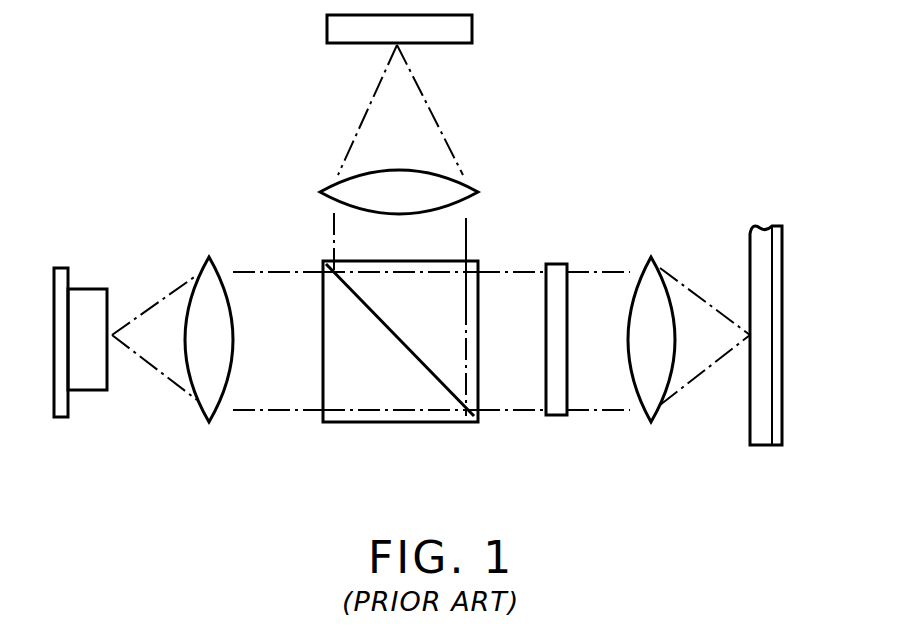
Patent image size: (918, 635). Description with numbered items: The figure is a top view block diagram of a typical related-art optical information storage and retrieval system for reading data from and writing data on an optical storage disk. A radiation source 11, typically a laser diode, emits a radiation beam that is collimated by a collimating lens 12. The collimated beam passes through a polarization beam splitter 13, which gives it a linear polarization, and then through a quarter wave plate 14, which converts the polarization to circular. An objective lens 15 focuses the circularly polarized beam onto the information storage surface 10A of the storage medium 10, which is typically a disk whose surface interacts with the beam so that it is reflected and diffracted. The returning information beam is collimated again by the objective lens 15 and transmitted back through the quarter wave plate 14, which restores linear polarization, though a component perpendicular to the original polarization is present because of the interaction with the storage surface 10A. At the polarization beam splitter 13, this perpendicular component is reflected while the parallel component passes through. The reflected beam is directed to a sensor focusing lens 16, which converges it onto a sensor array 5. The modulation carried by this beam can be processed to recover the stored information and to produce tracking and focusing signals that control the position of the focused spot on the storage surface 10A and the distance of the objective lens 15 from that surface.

The sensor array 5 is at (472, 30).
The sensor focusing lens 16 is at (478, 183).
The radiation source 11 is at (88, 288).
The collimating lens 12 is at (200, 270).
The polarization beam splitter 13 is at (380, 425).
The quarter wave plate 14 is at (555, 418).
The objective lens 15 is at (660, 265).
The storage medium 10 is at (782, 252).
The information storage surface 10A is at (772, 418).